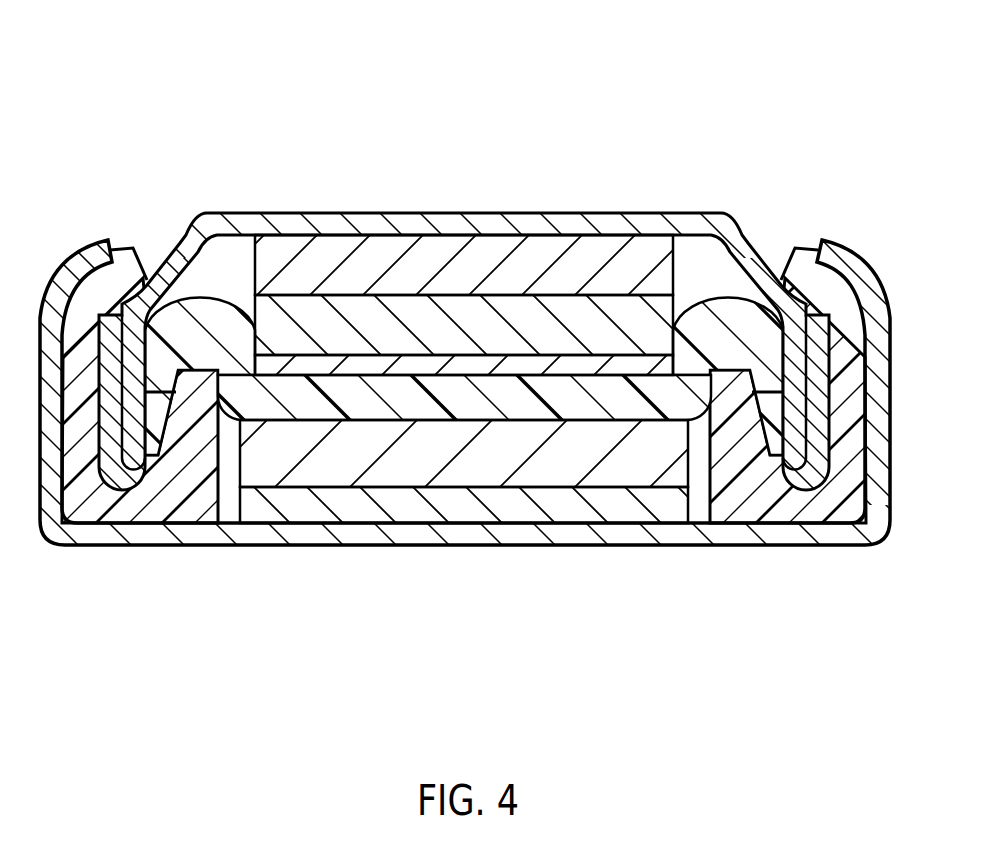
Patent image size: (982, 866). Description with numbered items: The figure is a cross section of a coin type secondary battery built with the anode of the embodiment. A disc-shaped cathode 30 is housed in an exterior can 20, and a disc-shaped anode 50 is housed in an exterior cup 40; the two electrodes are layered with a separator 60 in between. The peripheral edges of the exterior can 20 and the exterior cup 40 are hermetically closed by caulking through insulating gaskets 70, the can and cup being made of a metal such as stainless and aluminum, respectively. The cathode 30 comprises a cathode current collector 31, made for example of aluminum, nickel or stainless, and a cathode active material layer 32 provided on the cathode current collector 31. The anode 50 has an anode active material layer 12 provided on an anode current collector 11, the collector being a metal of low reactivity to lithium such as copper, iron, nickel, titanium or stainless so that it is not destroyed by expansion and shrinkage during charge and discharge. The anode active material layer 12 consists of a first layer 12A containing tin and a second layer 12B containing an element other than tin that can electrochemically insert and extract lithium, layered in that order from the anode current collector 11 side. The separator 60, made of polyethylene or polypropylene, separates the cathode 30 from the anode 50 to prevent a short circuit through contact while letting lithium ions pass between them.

The anode 50 is at (491, 310).
The anode active material layer 12 is at (491, 343).
The first layer 12A is at (450, 328).
The second layer 12B is at (533, 258).
The anode current collector 11 is at (491, 374).
The exterior cup 40 is at (246, 230).
The separator 60 is at (720, 300).
The exterior can 20 is at (314, 532).
The insulating gaskets 70 is at (171, 513).
The cathode 30 is at (491, 421).
The cathode current collector 31 is at (635, 628).
The cathode active material layer 32 is at (610, 473).